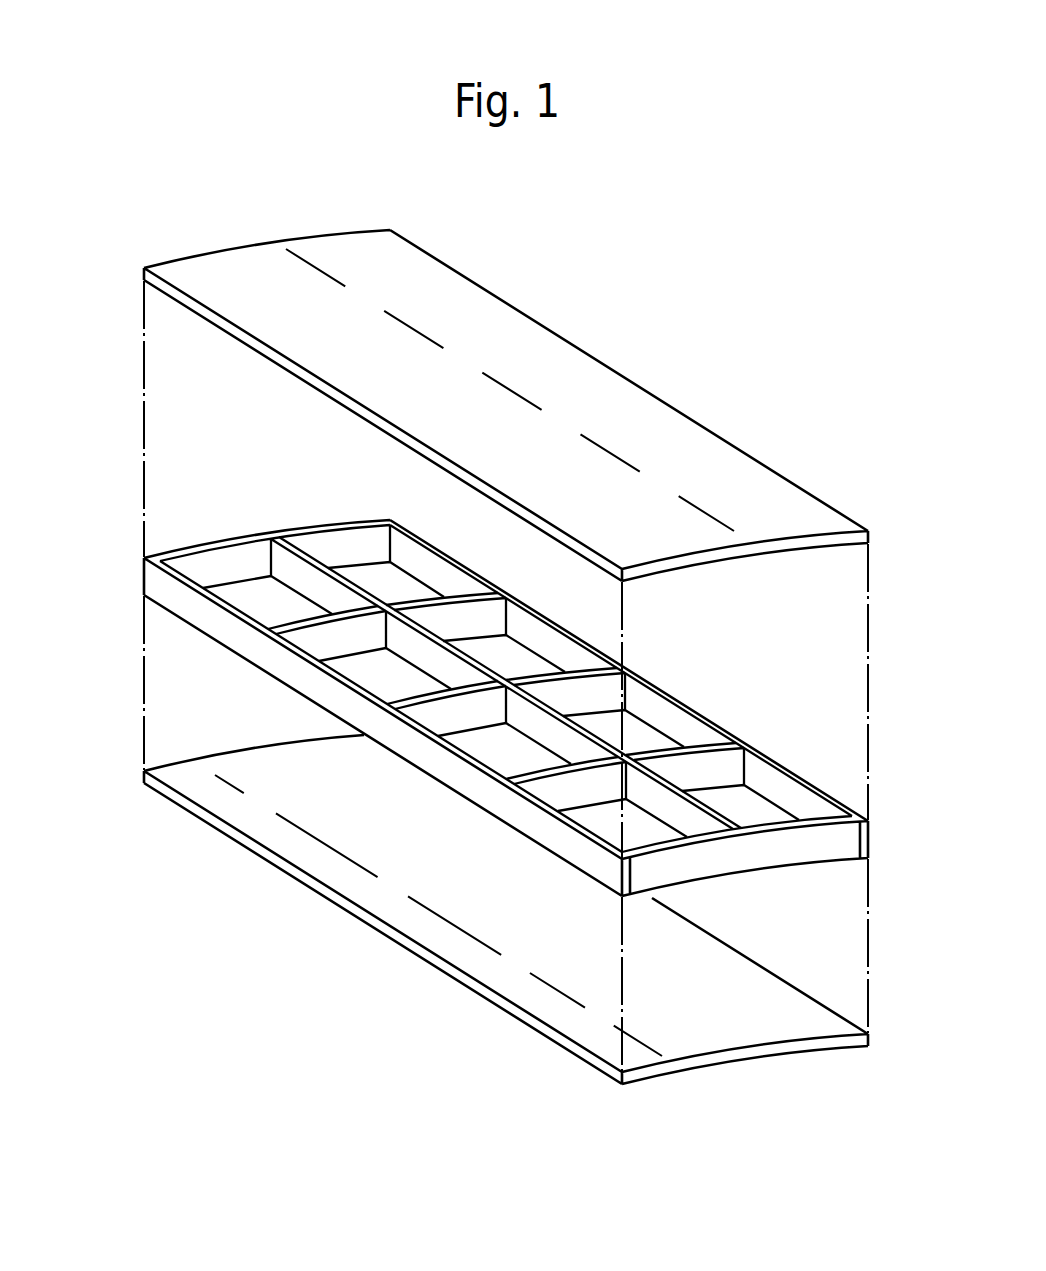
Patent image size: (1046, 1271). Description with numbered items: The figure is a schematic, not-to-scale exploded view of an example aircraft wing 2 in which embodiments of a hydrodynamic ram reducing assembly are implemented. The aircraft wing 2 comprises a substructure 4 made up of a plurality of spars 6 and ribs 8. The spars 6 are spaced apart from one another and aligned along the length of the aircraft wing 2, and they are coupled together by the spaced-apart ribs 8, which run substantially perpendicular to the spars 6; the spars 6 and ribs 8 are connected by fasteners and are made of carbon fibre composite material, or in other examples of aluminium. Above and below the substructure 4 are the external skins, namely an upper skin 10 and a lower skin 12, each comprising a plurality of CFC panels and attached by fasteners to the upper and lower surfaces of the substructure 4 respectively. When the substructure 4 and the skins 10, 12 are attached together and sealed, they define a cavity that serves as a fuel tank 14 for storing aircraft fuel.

The aircraft wing 2 is at (556, 236).
The substructure 4 is at (508, 672).
The spars 6 is at (150, 583).
The ribs 8 is at (332, 537).
The upper skin 10 is at (623, 410).
The lower skin 12 is at (455, 953).
The fuel tank 14 is at (513, 663).